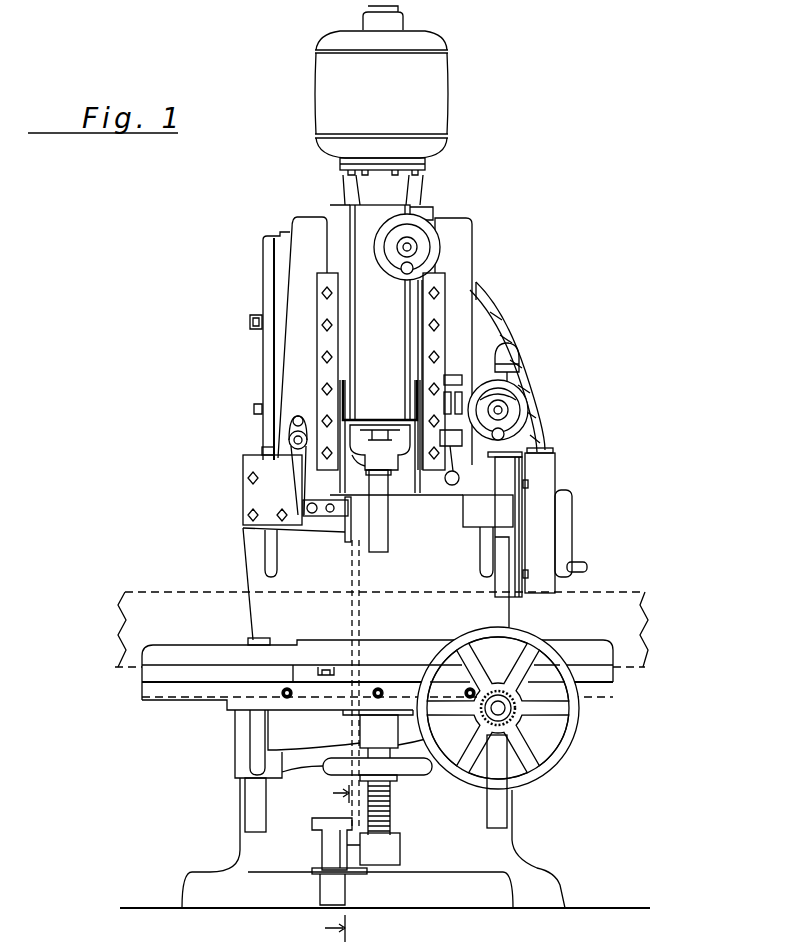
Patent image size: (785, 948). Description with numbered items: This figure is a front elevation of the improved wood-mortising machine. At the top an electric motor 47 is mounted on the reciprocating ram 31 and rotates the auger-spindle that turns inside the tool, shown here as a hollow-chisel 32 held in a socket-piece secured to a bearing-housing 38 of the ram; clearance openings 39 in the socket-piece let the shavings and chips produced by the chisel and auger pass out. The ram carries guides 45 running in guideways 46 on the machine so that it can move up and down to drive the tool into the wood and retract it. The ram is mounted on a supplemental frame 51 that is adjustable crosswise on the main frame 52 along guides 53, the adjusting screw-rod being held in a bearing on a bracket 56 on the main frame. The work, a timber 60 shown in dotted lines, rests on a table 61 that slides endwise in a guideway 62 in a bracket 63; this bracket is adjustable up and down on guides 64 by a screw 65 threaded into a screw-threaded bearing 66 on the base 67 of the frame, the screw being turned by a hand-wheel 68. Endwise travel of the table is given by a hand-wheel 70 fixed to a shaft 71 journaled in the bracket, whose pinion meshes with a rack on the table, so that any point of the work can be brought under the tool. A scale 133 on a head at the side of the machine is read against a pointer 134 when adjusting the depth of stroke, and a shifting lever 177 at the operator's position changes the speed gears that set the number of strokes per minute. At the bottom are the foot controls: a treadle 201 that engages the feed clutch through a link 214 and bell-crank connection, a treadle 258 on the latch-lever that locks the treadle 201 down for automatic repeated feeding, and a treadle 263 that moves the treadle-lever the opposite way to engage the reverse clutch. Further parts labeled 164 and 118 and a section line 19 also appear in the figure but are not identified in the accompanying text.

The electric motor 47 is at (447, 128).
The ram 31 is at (363, 218).
The guides 45 is at (410, 217).
The upper pulley 164 is at (432, 247).
The supplemental frame 51 is at (472, 270).
The guideways 46 is at (450, 330).
The scale 133 is at (520, 345).
The pointer 134 is at (519, 360).
The lower pulley 118 is at (526, 412).
The shifting lever 177 is at (459, 478).
The clearance openings 39 is at (351, 471).
The bearing-housing 38 is at (380, 456).
The bracket 56 is at (248, 486).
The hollow-chisel 32 is at (389, 520).
The guides 53 is at (476, 502).
The link 214 is at (343, 532).
The timber 60 is at (640, 588).
The table 61 is at (613, 680).
The guideway 62 is at (228, 700).
The bracket 63 is at (235, 742).
The guides 64 is at (531, 806).
The hand-wheel 68 is at (424, 770).
The screw 65 is at (392, 806).
The screw-threaded bearing 66 is at (400, 838).
The main frame 52 is at (507, 842).
The treadle 263 is at (314, 822).
The treadle 258 is at (318, 880).
The treadle 201 is at (362, 876).
The base 67 is at (500, 890).
The hand-wheel 70 is at (572, 740).
The shaft 71 is at (512, 708).
The section line 19 is at (328, 741).